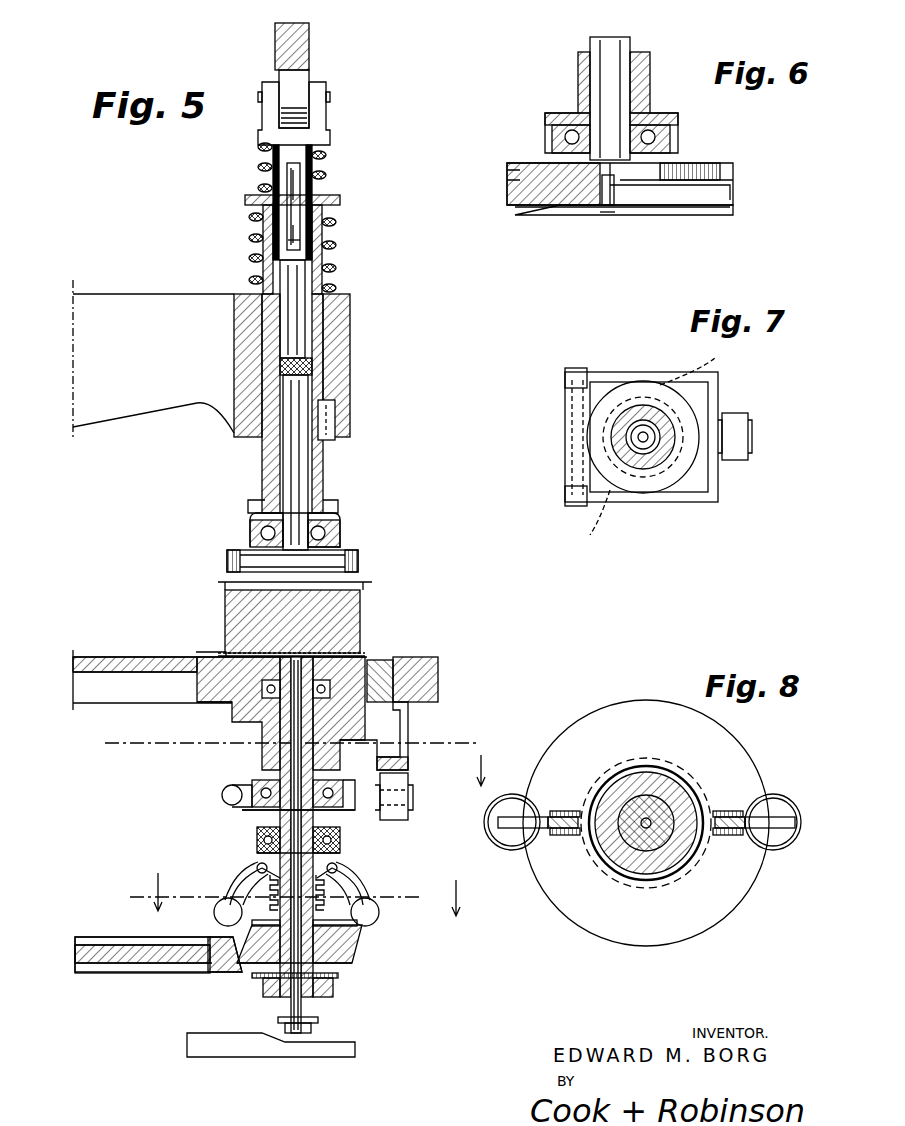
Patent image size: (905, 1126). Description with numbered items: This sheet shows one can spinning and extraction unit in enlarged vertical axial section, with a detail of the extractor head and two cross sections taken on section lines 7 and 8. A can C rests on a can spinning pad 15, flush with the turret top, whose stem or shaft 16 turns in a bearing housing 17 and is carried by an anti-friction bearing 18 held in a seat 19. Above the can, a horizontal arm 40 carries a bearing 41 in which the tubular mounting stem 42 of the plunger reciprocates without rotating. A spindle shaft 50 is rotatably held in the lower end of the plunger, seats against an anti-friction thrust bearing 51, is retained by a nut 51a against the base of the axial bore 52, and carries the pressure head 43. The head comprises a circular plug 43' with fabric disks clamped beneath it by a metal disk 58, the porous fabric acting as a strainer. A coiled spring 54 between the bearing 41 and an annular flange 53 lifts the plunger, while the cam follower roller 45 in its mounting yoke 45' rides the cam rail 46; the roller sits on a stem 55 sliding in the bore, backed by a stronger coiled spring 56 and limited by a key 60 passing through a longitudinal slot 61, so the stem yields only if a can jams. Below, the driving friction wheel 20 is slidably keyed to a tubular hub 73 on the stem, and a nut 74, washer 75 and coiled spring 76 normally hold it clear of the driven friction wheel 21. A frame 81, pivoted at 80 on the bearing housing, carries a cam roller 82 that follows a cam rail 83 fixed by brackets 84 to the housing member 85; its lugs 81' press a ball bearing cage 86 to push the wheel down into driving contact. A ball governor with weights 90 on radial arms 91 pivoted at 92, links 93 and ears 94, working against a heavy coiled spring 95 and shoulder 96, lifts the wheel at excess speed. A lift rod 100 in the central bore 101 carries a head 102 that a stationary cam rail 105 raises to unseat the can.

In FIG. 5, the cam rail 46 is at (312, 42).
In FIG. 5, the cam follower roller 45 is at (330, 92).
In FIG. 5, the mounting yoke 45' is at (325, 113).
In FIG. 5, the stem 55 is at (296, 158).
In FIG. 5, the coiled spring 56 is at (258, 170).
In FIG. 5, the annular flange 53 is at (340, 200).
In FIG. 5, the longitudinal slot 61 is at (288, 210).
In FIG. 6, the longitudinal slot 61 is at (700, 205).
In FIG. 5, the key 60 is at (288, 240).
In FIG. 6, the key 60 is at (612, 205).
In FIG. 5, the coiled spring 54 is at (324, 262).
In FIG. 5, the horizontal arm 40 is at (150, 400).
In FIG. 5, the bearing 41 is at (350, 347).
In FIG. 5, the tubular mounting stem 42 is at (323, 455).
In FIG. 6, the tubular mounting stem 42 is at (640, 95).
In FIG. 5, the axial bore 52 is at (300, 315).
In FIG. 5, the nut 51a is at (312, 370).
In FIG. 5, the spindle shaft 50 is at (292, 487).
In FIG. 6, the spindle shaft 50 is at (605, 72).
In FIG. 5, the anti-friction thrust bearing 51 is at (255, 532).
In FIG. 6, the anti-friction thrust bearing 51 is at (558, 137).
In FIG. 5, the pressure head 43 is at (260, 570).
In FIG. 6, the pressure head 43 is at (605, 206).
In FIG. 6, the circular plug 43' is at (622, 230).
In FIG. 5, the can C is at (225, 605).
In FIG. 5, the head of lift rod 102 is at (360, 635).
In FIG. 5, the can spinning pad 15 is at (362, 648).
In FIG. 5, the coiled spring 95 is at (200, 648).
In FIG. 8, the coiled spring 95 is at (685, 778).
In FIG. 5, the anti-friction bearing 18 is at (435, 700).
In FIG. 5, the frame or housing member 85 is at (430, 665).
In FIG. 5, the seat 19 is at (225, 712).
In FIG. 5, the central bore 101 is at (340, 700).
In FIG. 5, the bracket 84 is at (408, 720).
In FIG. 5, the cam rail 83 is at (400, 765).
In FIG. 5, the bearing housing 17 is at (372, 745).
In FIG. 7, the bearing housing 17 is at (660, 450).
In FIG. 5, the section line 7— 7 is at (291, 760).
In FIG. 5, the stem or shaft 16 is at (290, 745).
In FIG. 7, the stem or shaft 16 is at (638, 440).
In FIG. 8, the stem or shaft 16 is at (680, 850).
In FIG. 5, the lift rod 100 is at (255, 790).
In FIG. 7, the lift rod 100 is at (640, 437).
In FIG. 5, the pivot 80 is at (225, 800).
In FIG. 7, the pivot 80 is at (565, 470).
In FIG. 5, the lugs 81' is at (277, 820).
In FIG. 7, the lugs 81' is at (659, 448).
In FIG. 5, the cam roller 82 is at (400, 815).
In FIG. 7, the cam roller 82 is at (740, 420).
In FIG. 5, the ball bearing cage 86 is at (257, 838).
In FIG. 7, the ball bearing cage 86 is at (690, 415).
In FIG. 5, the frame 81 is at (350, 849).
In FIG. 7, the frame 81 is at (641, 455).
In FIG. 5, the pivot 92 is at (330, 868).
In FIG. 5, the shoulder 96 is at (338, 868).
In FIG. 5, the radial arm 91 is at (240, 880).
In FIG. 8, the radial arm 91 is at (520, 850).
In FIG. 5, the section line 8— 8 is at (287, 894).
In FIG. 5, the ball governor weight 90 is at (214, 912).
In FIG. 8, the ball governor weight 90 is at (512, 850).
In FIG. 5, the ear 94 is at (355, 925).
In FIG. 8, the ear 94 is at (555, 835).
In FIG. 5, the tubular hub 73 is at (352, 950).
In FIG. 8, the tubular hub 73 is at (640, 860).
In FIG. 5, the coiled spring 76 is at (338, 975).
In FIG. 8, the coiled spring 76 is at (670, 870).
In FIG. 5, the washer 75 is at (333, 985).
In FIG. 5, the nut 74 is at (318, 1025).
In FIG. 5, the driving friction wheel 20 is at (350, 965).
In FIG. 8, the driving friction wheel 20 is at (585, 930).
In FIG. 5, the driven friction wheel 21 is at (215, 955).
In FIG. 5, the link 93 is at (225, 940).
In FIG. 8, the link 93 is at (560, 812).
In FIG. 5, the stationary cam rail 105 is at (225, 1045).
In FIG. 6, the metal disk 58 is at (605, 212).